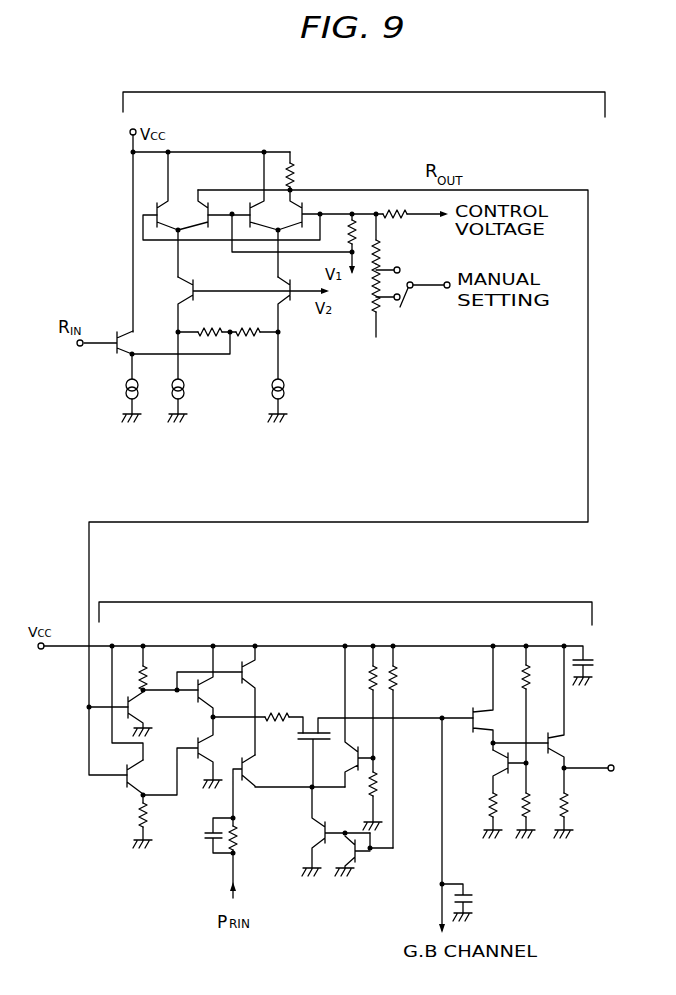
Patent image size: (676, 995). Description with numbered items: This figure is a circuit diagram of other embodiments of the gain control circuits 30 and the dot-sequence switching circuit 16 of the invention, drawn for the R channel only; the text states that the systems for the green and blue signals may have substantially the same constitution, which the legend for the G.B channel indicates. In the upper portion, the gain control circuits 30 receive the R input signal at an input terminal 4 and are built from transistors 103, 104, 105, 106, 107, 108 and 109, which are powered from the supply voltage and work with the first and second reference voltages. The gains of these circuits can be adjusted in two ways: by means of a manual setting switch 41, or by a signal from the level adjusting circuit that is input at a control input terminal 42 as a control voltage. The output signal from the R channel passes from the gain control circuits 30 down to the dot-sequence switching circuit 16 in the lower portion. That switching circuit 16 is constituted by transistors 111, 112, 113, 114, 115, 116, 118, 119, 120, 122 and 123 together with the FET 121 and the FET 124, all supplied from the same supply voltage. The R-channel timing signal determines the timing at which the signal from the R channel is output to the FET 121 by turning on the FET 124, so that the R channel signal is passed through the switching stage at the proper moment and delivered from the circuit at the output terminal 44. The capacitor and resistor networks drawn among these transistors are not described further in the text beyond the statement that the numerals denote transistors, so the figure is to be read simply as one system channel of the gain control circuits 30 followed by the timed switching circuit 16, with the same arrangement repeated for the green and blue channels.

The gain control circuits 30 is at (530, 77).
The dot-sequence switching circuit 16 is at (526, 585).
The input terminal 4 is at (79, 349).
The manual setting switch 41 is at (412, 310).
The control input terminal 42 is at (425, 222).
The output terminal 44 is at (611, 772).
The transistor 103 is at (121, 325).
The transistor 104 is at (152, 200).
The transistor 105 is at (188, 291).
The transistor 106 is at (196, 210).
The transistor 107 is at (255, 205).
The transistor 108 is at (304, 200).
The transistor 109 is at (276, 289).
The transistor 111 is at (131, 796).
The transistor 112 is at (143, 704).
The transistor 113 is at (213, 689).
The transistor 114 is at (227, 746).
The transistor 115 is at (257, 672).
The transistor 116 is at (253, 764).
The transistor 118 is at (308, 832).
The transistor 119 is at (363, 858).
The transistor 120 is at (345, 752).
The FET 121 is at (480, 706).
The transistor 122 is at (497, 763).
The transistor 123 is at (565, 742).
The FET 124 is at (313, 733).